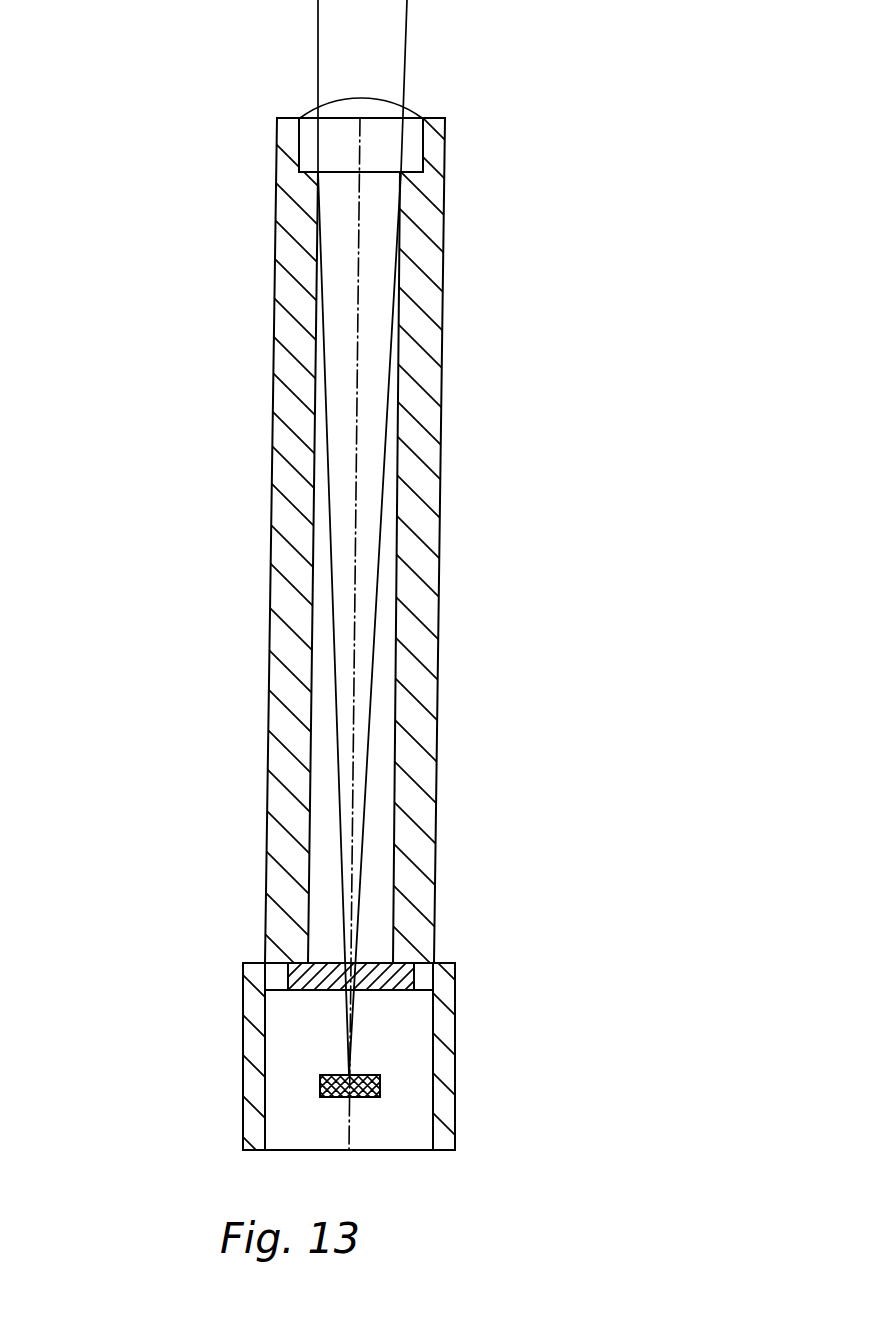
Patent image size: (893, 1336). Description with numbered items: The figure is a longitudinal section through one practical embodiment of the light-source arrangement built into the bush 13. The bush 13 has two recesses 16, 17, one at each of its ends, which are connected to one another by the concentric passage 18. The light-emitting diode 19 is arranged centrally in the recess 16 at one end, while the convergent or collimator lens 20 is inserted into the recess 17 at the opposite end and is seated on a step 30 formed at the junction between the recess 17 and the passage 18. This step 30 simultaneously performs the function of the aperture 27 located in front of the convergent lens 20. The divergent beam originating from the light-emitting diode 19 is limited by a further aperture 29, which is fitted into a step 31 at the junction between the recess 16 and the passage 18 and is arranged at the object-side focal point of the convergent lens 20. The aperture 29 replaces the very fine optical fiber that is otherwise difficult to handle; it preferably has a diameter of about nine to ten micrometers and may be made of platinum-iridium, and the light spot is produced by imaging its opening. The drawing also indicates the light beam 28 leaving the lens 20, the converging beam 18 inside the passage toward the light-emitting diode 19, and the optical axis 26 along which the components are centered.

The bush 13 is at (415, 763).
The recess 16 is at (395, 1042).
The recess 17 is at (427, 140).
The concentric passage 18 is at (382, 638).
The light-emitting diode 19 is at (320, 1083).
The convergent or collimator lens 20 is at (365, 110).
The optical axis 26 is at (367, 495).
The aperture 27 is at (407, 177).
The incident light beam 28 is at (365, 15).
The aperture 29 is at (405, 972).
The step 30 is at (326, 160).
The step 31 is at (300, 963).